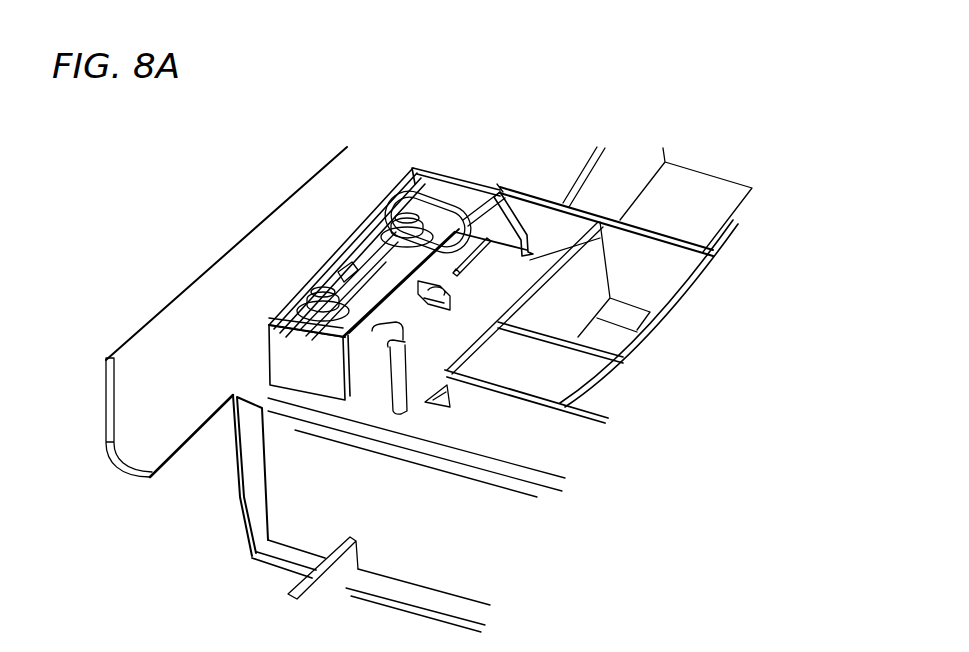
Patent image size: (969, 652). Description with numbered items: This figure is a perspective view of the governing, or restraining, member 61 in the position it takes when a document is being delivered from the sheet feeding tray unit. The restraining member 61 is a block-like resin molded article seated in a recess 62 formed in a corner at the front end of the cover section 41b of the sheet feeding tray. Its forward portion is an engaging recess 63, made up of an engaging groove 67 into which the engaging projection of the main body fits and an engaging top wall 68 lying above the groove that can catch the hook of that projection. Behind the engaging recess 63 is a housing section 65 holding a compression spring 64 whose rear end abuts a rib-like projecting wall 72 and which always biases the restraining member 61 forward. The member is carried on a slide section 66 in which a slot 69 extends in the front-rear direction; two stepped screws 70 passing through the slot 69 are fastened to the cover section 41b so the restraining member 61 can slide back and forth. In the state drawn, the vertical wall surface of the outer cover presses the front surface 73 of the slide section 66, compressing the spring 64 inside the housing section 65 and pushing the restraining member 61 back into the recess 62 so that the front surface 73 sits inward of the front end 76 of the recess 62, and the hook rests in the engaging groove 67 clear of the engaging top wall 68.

The restraining member 61 is at (343, 250).
The recess 62 is at (568, 218).
The engaging recess 63 is at (383, 392).
The compression spring 64 is at (490, 262).
The housing section 65 is at (531, 295).
The slide section 66 is at (428, 178).
The engaging groove 67 is at (385, 413).
The engaging top wall 68 is at (375, 280).
The slot 69 is at (342, 273).
The stepped screws 70 is at (310, 287).
The rib-like projecting wall 72 is at (513, 217).
The front surface 73 is at (305, 406).
The front end 76 is at (278, 498).
The cover section 41b is at (498, 182).